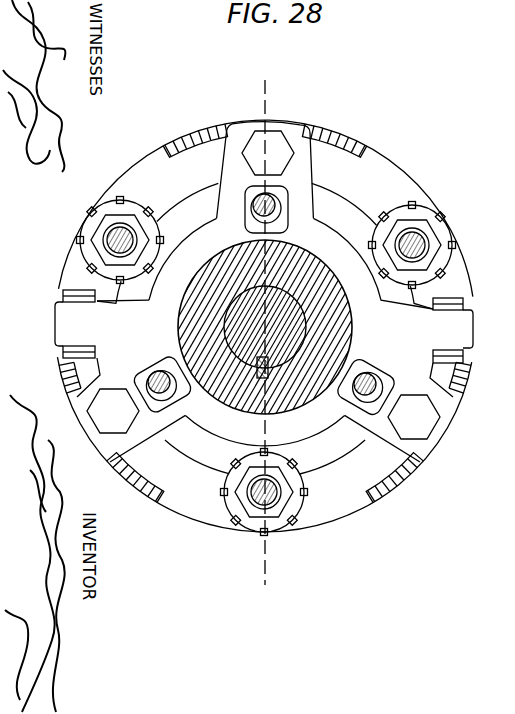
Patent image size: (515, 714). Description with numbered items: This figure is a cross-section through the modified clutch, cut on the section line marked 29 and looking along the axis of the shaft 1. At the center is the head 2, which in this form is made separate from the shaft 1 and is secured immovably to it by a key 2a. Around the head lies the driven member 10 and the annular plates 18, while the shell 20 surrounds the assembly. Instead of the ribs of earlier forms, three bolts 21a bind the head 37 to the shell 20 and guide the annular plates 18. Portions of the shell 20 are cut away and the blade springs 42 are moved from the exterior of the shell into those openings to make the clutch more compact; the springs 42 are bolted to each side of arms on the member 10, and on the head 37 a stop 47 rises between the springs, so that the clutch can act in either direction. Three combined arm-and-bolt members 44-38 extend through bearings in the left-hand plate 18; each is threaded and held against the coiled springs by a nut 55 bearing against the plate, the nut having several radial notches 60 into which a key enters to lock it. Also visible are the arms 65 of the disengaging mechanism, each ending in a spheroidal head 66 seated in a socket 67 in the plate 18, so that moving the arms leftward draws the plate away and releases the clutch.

The shaft 1 is at (263, 327).
The head 2 is at (264, 327).
The key 2a is at (270, 369).
The member 10 is at (265, 326).
The annular plate 18 is at (255, 195).
The shell 20 is at (355, 147).
The bolt 21a is at (263, 285).
The section line 29— 29 is at (264, 331).
The head 37 is at (265, 332).
The blade spring 42 is at (63, 295).
The combined arm and bolt member 44-38 is at (107, 237).
The stop 47 is at (489, 306).
The nut 55 is at (115, 216).
The radial notch 60 is at (122, 204).
The arm 65 is at (272, 199).
The spheroidal head 66 is at (281, 208).
The socket 67 is at (258, 227).